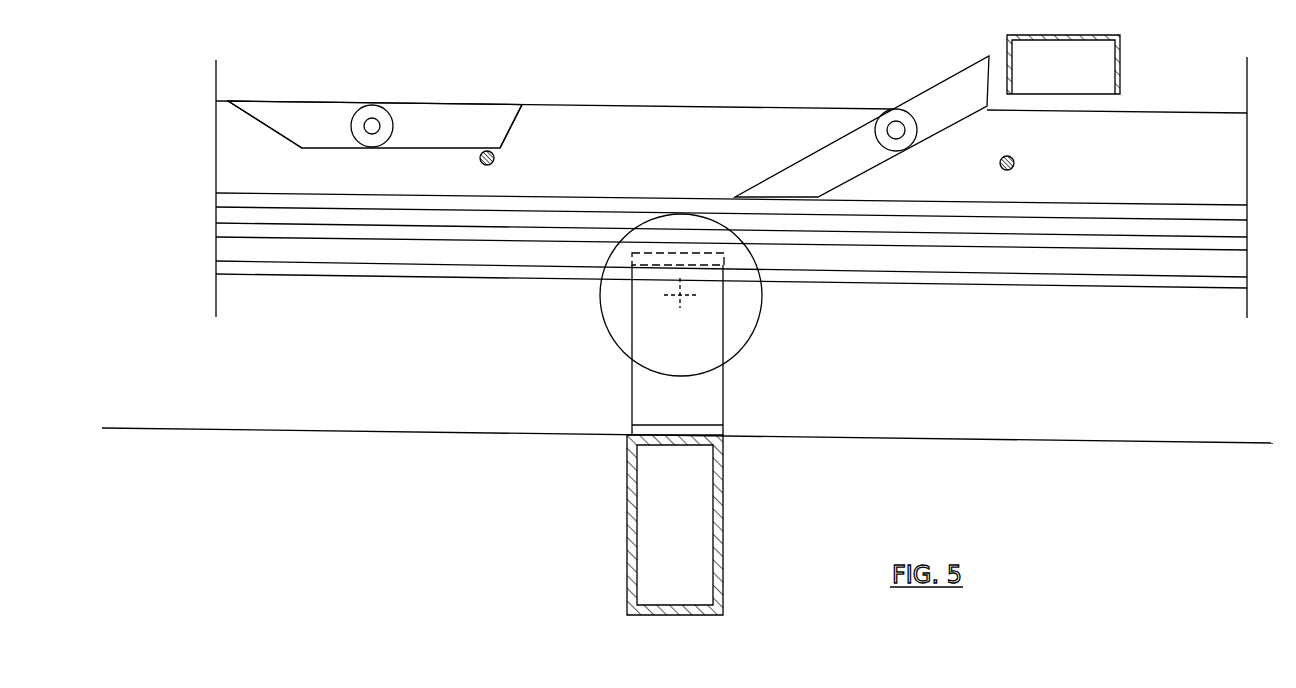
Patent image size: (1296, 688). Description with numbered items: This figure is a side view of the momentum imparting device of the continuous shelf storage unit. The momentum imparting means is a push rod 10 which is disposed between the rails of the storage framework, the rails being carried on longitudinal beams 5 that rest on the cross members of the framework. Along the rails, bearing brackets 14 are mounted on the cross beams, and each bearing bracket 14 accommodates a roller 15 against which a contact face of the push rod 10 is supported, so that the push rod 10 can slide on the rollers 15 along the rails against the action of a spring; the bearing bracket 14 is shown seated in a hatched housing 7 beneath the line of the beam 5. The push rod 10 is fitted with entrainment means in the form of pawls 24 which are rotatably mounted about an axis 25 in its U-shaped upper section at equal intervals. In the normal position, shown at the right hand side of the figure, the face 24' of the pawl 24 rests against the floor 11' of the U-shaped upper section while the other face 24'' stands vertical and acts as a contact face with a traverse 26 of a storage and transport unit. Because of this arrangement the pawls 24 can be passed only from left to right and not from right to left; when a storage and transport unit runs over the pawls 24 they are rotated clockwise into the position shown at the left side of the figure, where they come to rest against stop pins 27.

The longitudinal beam 5 is at (1171, 415).
The housing 7 is at (723, 548).
The push rod 10 is at (1225, 178).
The floor of the U-shaped upper section 11' is at (731, 224).
The bearing bracket 14 is at (655, 396).
The roller 15 is at (600, 306).
The pawl 24 is at (608, 109).
The pawl face 24' is at (265, 132).
The pawl contact face 24'' is at (529, 135).
The axis 25 is at (372, 118).
The traverse 26 is at (1053, 40).
The stop pin 27 is at (481, 159).